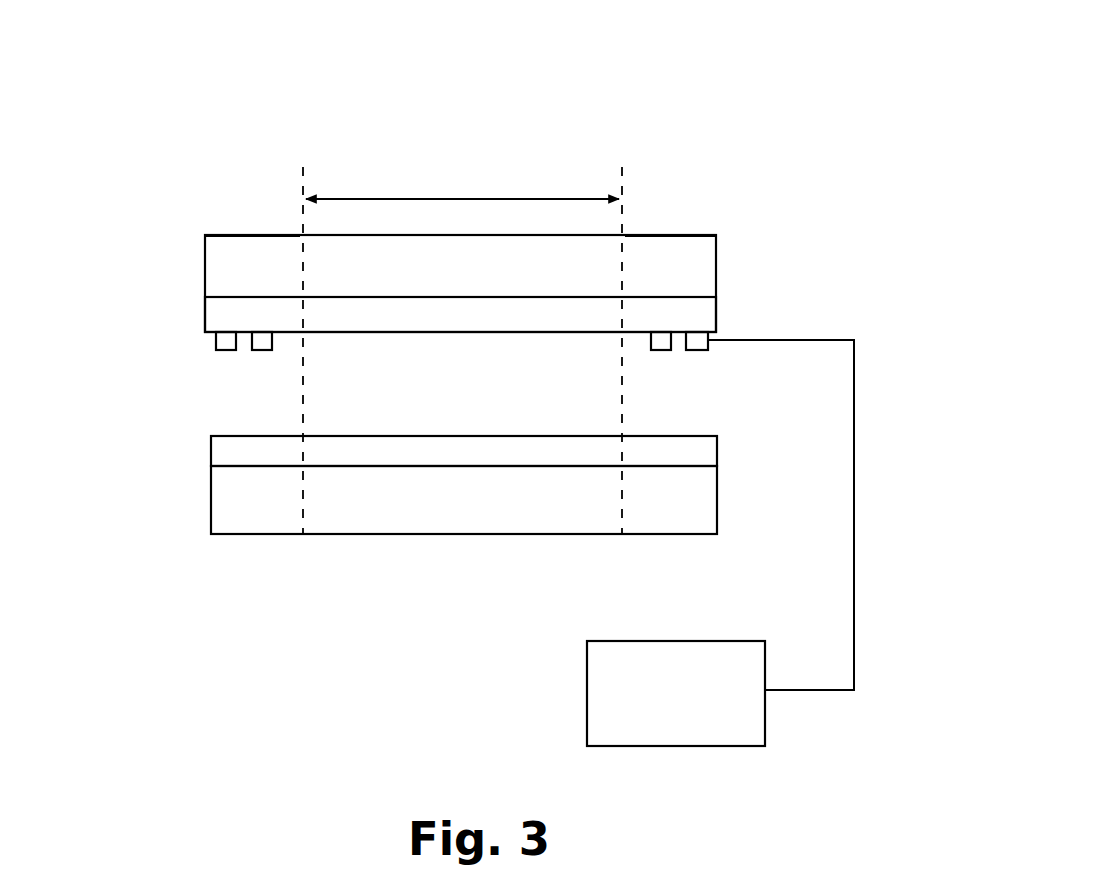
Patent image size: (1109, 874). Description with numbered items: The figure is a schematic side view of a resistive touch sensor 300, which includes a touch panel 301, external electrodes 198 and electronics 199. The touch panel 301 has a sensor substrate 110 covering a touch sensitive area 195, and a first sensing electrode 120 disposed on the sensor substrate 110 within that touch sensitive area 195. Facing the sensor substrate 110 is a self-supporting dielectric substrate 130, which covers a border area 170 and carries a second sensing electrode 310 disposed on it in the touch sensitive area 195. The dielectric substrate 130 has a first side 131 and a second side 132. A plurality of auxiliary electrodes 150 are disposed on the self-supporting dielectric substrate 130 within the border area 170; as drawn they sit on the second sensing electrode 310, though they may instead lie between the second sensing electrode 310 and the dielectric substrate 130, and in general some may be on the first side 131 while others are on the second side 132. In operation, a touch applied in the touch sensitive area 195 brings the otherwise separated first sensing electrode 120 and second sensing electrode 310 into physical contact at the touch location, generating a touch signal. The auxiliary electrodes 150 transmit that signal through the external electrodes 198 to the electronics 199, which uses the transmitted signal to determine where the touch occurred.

The resistive touch sensor 300 is at (106, 104).
The touch panel 301 is at (801, 228).
The self-supporting dielectric substrate 130 is at (205, 267).
The first side of the dielectric substrate 131 is at (523, 235).
The second side of the dielectric substrate 132 is at (518, 298).
The second sensing electrode 310 is at (717, 313).
The border area 170 is at (255, 235).
The auxiliary electrodes 150 is at (215, 340).
The touch sensitive area 195 is at (452, 199).
The sensor substrate 110 is at (211, 484).
The first sensing electrode 120 is at (211, 450).
The external electrodes 198 is at (855, 521).
The electronics 199 is at (587, 687).